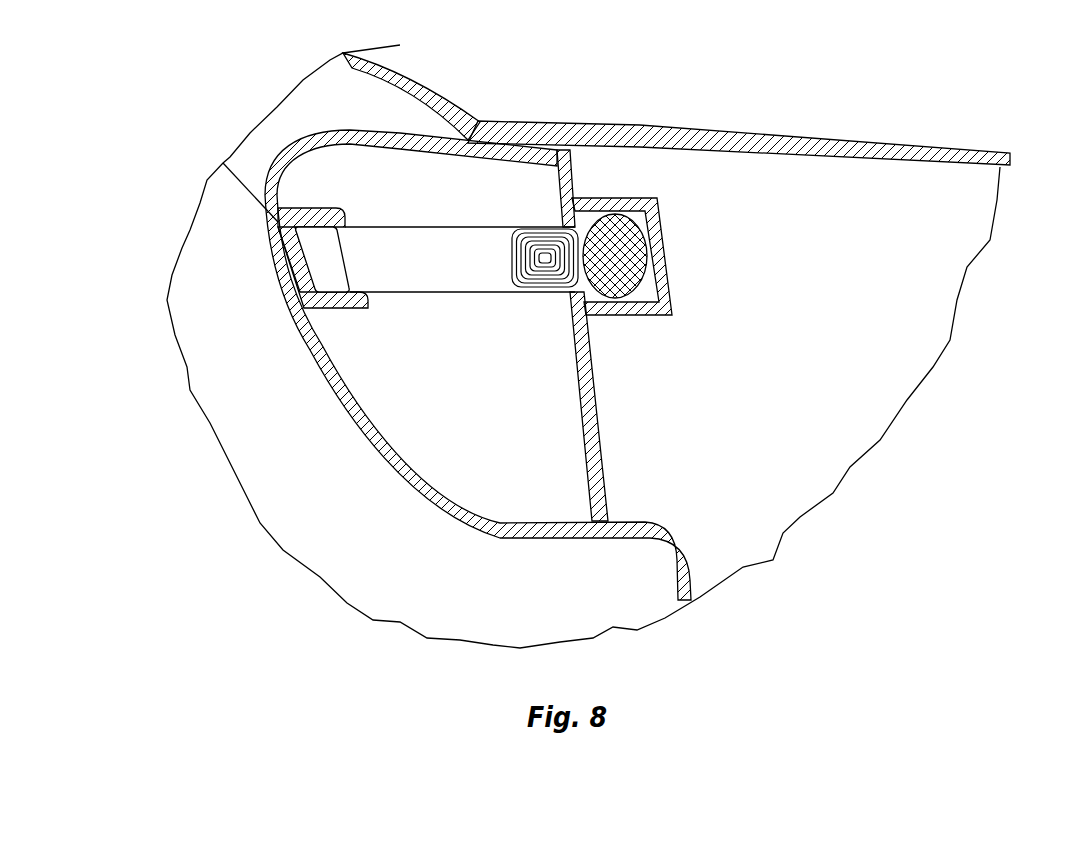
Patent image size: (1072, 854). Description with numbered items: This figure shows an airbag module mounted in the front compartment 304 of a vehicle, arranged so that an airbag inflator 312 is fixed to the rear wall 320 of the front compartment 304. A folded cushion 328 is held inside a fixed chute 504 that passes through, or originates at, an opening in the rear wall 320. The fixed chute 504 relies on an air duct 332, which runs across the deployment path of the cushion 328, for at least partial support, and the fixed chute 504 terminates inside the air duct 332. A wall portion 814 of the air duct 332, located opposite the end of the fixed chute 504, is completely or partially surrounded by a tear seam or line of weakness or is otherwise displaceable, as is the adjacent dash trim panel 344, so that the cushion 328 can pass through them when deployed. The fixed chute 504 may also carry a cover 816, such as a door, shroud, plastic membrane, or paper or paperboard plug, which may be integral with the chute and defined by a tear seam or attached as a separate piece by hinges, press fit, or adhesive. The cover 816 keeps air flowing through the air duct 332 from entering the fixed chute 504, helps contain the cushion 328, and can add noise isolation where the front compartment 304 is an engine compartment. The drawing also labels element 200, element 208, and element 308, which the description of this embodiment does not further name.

The housing 200 is at (373, 585).
The wall 208 is at (370, 447).
The front compartment 304 is at (838, 178).
The channel 308 is at (633, 198).
The airbag inflator 312 is at (647, 252).
The rear wall 320 is at (600, 426).
The folded cushion 328 is at (532, 230).
The air duct 332 is at (366, 303).
The dash trim panel 344 is at (275, 258).
The fixed chute 504 is at (466, 292).
The wall portion 814 is at (228, 163).
The cover 816 is at (343, 262).